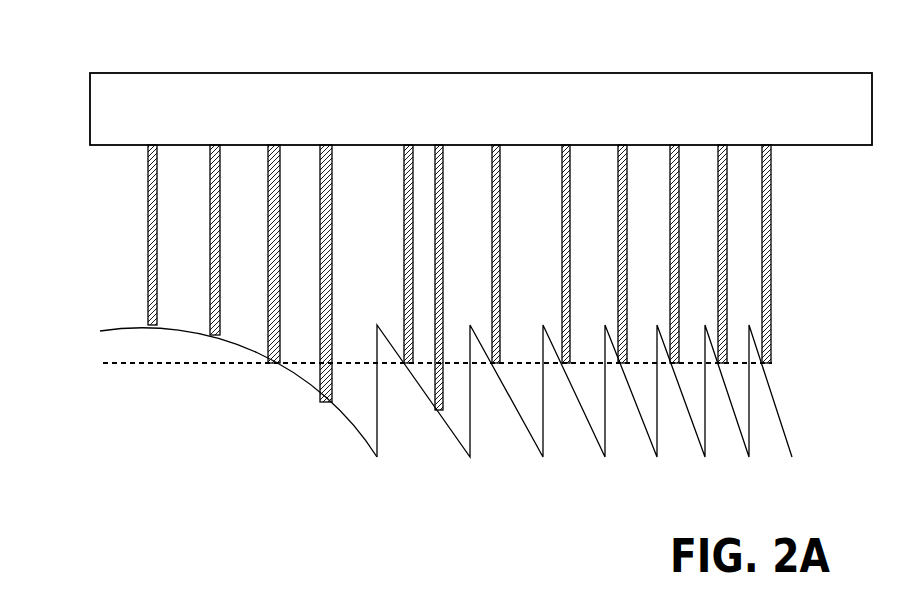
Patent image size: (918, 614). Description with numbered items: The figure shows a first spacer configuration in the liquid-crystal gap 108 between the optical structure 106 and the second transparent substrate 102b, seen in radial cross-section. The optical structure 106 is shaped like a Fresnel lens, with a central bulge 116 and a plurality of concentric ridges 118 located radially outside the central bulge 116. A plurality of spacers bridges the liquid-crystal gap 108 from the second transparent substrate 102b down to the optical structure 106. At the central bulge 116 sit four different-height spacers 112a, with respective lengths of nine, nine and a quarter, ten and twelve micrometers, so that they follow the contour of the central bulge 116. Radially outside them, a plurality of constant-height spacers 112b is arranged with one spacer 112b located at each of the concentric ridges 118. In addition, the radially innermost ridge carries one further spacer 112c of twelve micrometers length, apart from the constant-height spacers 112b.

The second transparent substrate 102b is at (466, 159).
The optical structure 106 is at (212, 434).
The liquid-crystal gap 108 is at (479, 259).
The different-height spacers 112a is at (222, 203).
The constant-height spacers 112b is at (602, 185).
The further spacer 112c is at (436, 329).
The central bulge 116 is at (238, 434).
The concentric ridges 118 is at (584, 442).